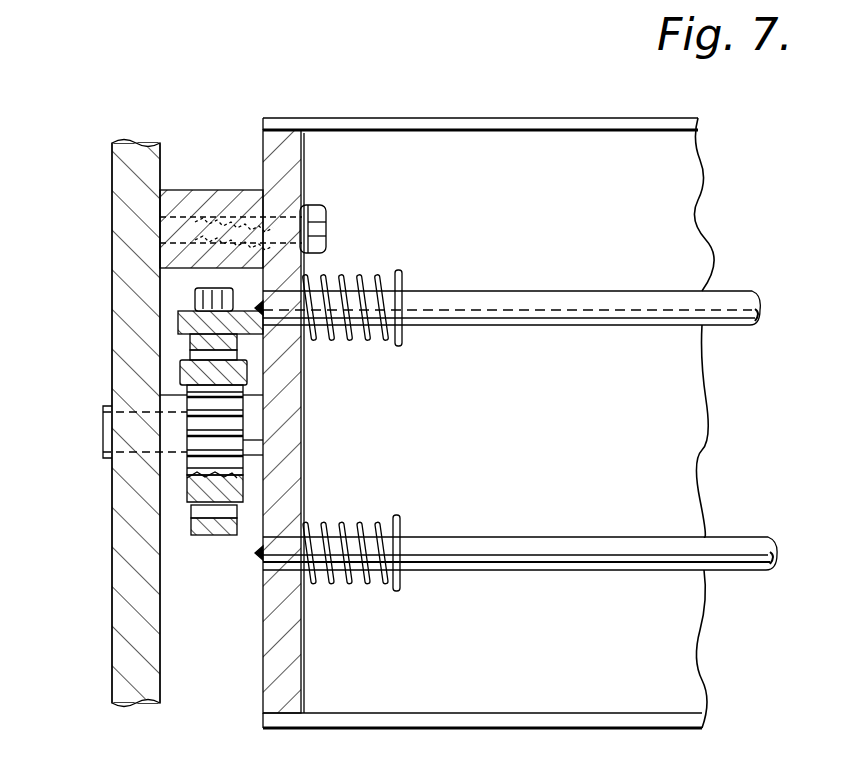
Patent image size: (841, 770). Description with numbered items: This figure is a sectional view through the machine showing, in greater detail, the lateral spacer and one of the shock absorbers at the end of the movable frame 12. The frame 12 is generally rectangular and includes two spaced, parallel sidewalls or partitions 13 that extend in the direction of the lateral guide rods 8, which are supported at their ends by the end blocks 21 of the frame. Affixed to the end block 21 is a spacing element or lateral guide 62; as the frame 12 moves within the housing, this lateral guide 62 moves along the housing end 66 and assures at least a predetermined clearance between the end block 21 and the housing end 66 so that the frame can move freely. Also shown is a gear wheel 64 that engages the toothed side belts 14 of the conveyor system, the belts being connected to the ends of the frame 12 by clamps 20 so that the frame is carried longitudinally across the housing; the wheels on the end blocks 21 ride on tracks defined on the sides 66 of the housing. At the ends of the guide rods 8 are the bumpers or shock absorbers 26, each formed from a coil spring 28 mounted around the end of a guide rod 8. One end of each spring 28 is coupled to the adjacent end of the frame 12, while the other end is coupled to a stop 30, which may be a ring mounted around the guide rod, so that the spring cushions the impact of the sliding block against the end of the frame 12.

The guide rod 8 is at (582, 292).
The frame 12 is at (488, 388).
The sidewall 13 is at (565, 118).
The toothed side belt 14 is at (196, 340).
The clamp 20 is at (182, 320).
The end block 21 is at (282, 444).
The shock absorber 26 is at (390, 416).
The coil spring 28 is at (374, 345).
The stop 30 is at (401, 343).
The lateral guide 62 is at (198, 188).
The gear wheel 64 is at (186, 470).
The housing end 66 is at (118, 614).